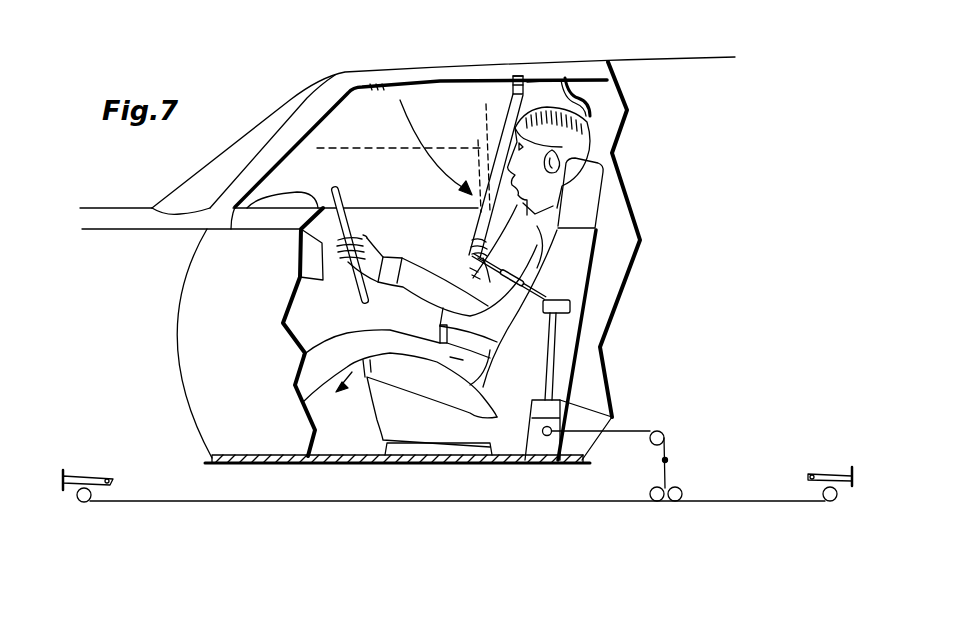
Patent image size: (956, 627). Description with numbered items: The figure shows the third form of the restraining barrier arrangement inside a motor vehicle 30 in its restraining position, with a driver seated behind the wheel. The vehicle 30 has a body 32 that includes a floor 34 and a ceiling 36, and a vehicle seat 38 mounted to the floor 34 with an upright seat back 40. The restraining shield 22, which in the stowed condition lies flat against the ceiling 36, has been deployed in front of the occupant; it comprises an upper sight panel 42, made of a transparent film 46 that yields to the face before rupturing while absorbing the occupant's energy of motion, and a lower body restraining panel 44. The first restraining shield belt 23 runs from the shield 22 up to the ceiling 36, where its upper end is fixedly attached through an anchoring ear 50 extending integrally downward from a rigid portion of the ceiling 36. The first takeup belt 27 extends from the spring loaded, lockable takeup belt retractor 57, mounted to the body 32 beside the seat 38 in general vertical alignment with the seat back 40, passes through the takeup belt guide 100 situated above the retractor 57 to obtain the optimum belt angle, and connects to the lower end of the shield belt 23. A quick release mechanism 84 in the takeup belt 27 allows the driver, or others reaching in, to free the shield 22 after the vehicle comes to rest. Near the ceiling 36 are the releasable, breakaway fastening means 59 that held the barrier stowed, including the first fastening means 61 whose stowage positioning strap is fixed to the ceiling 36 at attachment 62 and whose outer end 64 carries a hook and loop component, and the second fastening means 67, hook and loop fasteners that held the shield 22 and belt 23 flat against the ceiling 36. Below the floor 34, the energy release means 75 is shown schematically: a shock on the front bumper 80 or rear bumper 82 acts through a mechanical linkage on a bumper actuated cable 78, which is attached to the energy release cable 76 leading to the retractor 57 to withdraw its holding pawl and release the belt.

The restraining shield 22 is at (503, 127).
The first restraining shield belt 23 is at (503, 80).
The first takeup belt 27 is at (557, 333).
The motor vehicle 30 is at (308, 72).
The body 32 is at (127, 212).
The floor 34 is at (433, 465).
The ceiling 36 is at (438, 80).
The vehicle seat 38 is at (390, 410).
The seat back 40 is at (568, 277).
The upper sight panel 42 is at (503, 96).
The lower body restraining panel 44 is at (468, 192).
The transparent film 46 is at (439, 147).
The anchoring ear 50 is at (527, 82).
The first takeup belt retractor 57 is at (560, 407).
The releasable breakaway fastening means 59 is at (590, 91).
The first releasable breakaway fastening means 61 is at (600, 78).
The strap attachment 62 is at (590, 78).
The second outer end of strap 64 is at (590, 115).
The second releasable breakaway fastening means 67 is at (368, 88).
The energy release means 75 is at (87, 512).
The energy release cable 76 is at (668, 442).
The bumper actuated cable 78 is at (140, 502).
The front bumper 80 is at (75, 464).
The rear bumper 82 is at (852, 468).
The quick release mechanism 84 is at (513, 272).
The takeup belt guide 100 is at (570, 304).